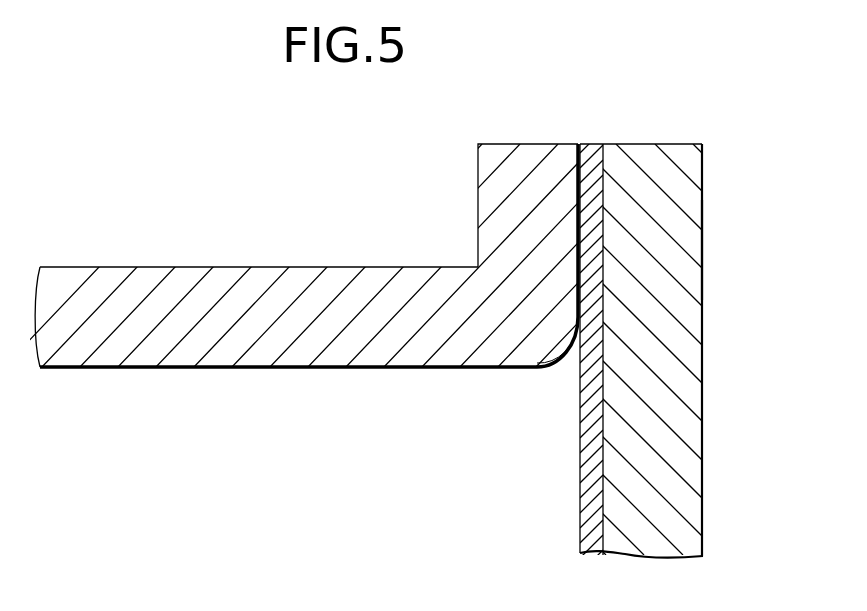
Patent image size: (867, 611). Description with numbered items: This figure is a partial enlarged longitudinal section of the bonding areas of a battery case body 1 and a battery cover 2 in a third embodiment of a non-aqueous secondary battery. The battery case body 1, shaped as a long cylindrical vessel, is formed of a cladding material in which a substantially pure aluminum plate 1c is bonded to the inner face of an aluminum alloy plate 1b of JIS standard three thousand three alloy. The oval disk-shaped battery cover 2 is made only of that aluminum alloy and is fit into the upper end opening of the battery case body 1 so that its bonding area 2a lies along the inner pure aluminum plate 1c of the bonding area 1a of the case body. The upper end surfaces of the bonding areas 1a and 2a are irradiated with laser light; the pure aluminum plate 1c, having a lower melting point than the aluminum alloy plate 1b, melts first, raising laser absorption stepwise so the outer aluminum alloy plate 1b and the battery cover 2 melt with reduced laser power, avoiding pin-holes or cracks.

The battery case body 1 is at (717, 402).
The bonding area 1a is at (692, 242).
The aluminum alloy plate 1b is at (648, 152).
The pure aluminum plate 1c is at (588, 152).
The battery cover 2 is at (248, 262).
The bonding area 2a is at (485, 171).